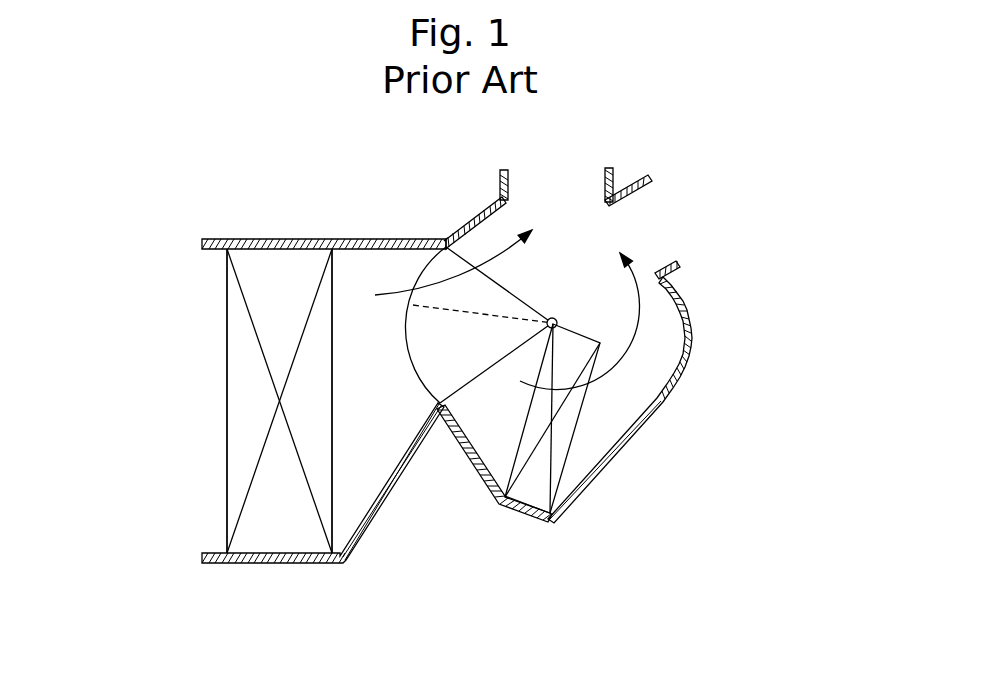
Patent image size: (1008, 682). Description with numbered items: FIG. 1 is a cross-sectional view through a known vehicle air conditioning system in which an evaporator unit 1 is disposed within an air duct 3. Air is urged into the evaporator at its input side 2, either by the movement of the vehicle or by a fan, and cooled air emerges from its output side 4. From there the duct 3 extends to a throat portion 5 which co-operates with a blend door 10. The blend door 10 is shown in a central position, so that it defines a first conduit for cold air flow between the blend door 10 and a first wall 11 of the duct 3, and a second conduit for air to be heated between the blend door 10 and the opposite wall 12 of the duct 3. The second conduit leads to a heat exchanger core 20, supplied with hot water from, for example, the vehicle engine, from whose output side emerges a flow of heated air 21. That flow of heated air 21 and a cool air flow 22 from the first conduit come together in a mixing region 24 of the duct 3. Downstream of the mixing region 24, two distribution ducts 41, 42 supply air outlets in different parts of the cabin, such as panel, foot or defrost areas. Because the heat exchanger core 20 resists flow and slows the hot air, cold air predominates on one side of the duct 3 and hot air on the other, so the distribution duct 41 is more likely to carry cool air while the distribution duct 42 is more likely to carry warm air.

The evaporator unit 1 is at (278, 260).
The input side 2 is at (226, 414).
The air duct 3 is at (356, 544).
The output side 4 is at (333, 414).
The throat portion 5 is at (446, 242).
The blend door 10 is at (482, 318).
The first wall 11 is at (488, 210).
The opposite wall 12 is at (482, 480).
The heat exchanger core 20 is at (572, 418).
The flow of heated air 21 is at (628, 341).
The cool air flow 22 is at (501, 257).
The mixing region 24 is at (605, 232).
The distribution duct 41 is at (556, 178).
The distribution duct 42 is at (660, 228).